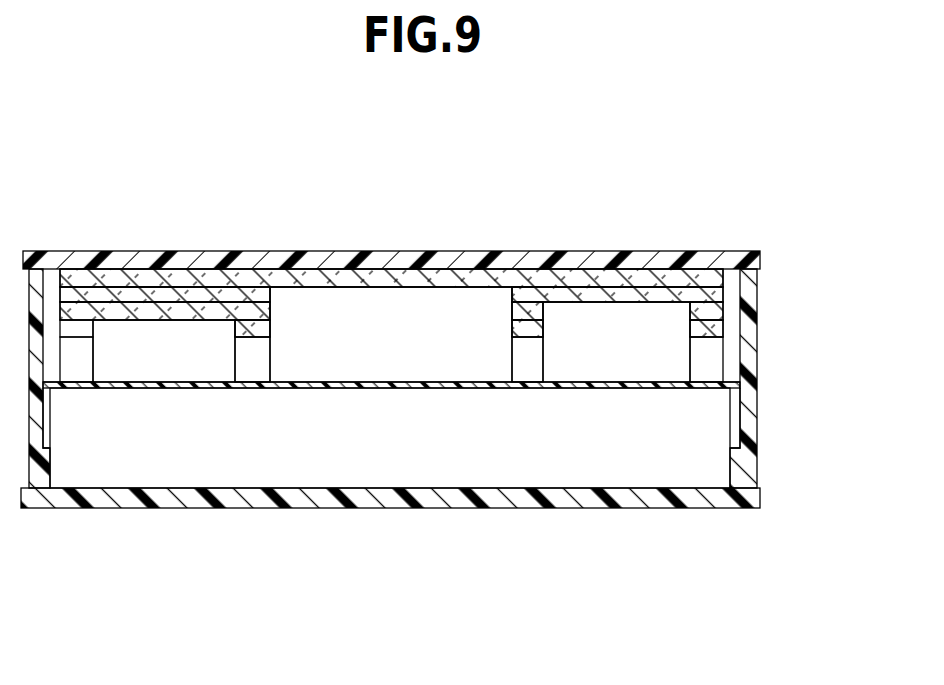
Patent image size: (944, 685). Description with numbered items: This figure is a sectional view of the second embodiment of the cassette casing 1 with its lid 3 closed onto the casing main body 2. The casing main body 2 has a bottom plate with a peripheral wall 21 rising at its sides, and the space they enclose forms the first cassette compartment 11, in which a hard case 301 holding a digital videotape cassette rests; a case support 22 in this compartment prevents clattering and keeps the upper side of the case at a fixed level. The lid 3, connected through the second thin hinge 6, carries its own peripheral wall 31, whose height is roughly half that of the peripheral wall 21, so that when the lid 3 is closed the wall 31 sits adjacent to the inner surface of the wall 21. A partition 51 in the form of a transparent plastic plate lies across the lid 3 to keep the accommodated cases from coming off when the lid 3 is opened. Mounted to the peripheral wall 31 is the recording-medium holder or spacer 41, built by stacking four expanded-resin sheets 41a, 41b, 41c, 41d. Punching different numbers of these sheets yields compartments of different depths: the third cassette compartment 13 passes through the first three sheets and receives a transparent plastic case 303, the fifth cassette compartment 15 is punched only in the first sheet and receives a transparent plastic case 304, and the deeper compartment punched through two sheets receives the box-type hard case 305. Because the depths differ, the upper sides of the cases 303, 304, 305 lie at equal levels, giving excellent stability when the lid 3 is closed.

The cassette casing 1 is at (415, 450).
The casing main body 2 is at (415, 425).
The lid 3 is at (391, 486).
The second thin hinge 6 is at (571, 304).
The first cassette compartment 11 is at (440, 483).
The third cassette compartment 13 is at (342, 290).
The fifth cassette compartment 15 is at (138, 318).
The peripheral wall 21 is at (763, 474).
The case support 22 is at (52, 455).
The peripheral wall 31 is at (757, 388).
The recording-medium holder or spacer 41 is at (454, 237).
The first expanded-resin sheet 41a is at (426, 277).
The second expanded-resin sheet 41b is at (726, 305).
The third expanded-resin sheet 41c is at (715, 292).
The fourth expanded-resin sheet 41d is at (697, 275).
The partition 51 is at (608, 392).
The hard case 301 is at (300, 470).
The transparent plastic case 303 is at (457, 305).
The transparent plastic case 304 is at (213, 340).
The box-type hard case 305 is at (648, 327).